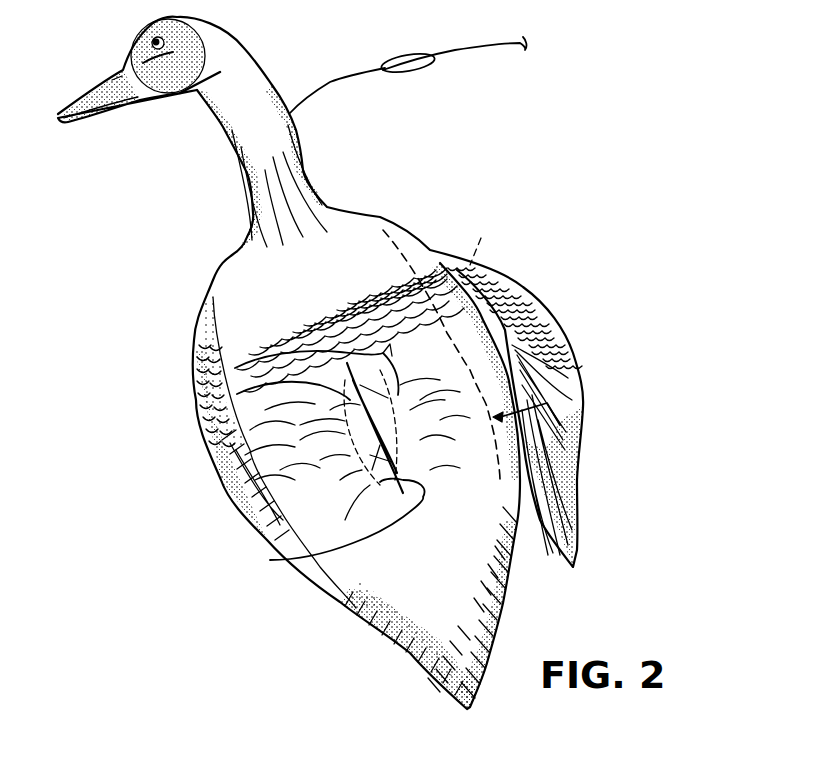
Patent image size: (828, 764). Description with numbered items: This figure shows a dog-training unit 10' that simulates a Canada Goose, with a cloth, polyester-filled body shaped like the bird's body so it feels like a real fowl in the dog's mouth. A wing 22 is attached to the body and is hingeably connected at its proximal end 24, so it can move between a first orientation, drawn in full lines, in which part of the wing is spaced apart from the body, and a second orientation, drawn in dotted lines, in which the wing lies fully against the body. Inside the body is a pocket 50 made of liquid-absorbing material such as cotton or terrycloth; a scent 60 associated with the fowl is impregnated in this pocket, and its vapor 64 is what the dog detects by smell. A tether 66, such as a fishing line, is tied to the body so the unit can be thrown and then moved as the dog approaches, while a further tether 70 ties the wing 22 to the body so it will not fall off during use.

The unit 10' is at (320, 363).
The wing 22 is at (462, 268).
The proximal end 24 is at (425, 248).
The pocket 50 is at (287, 558).
The scent 60 is at (237, 394).
The vapor 64 is at (235, 368).
The tether 66 is at (327, 88).
The further tether 70 is at (560, 425).